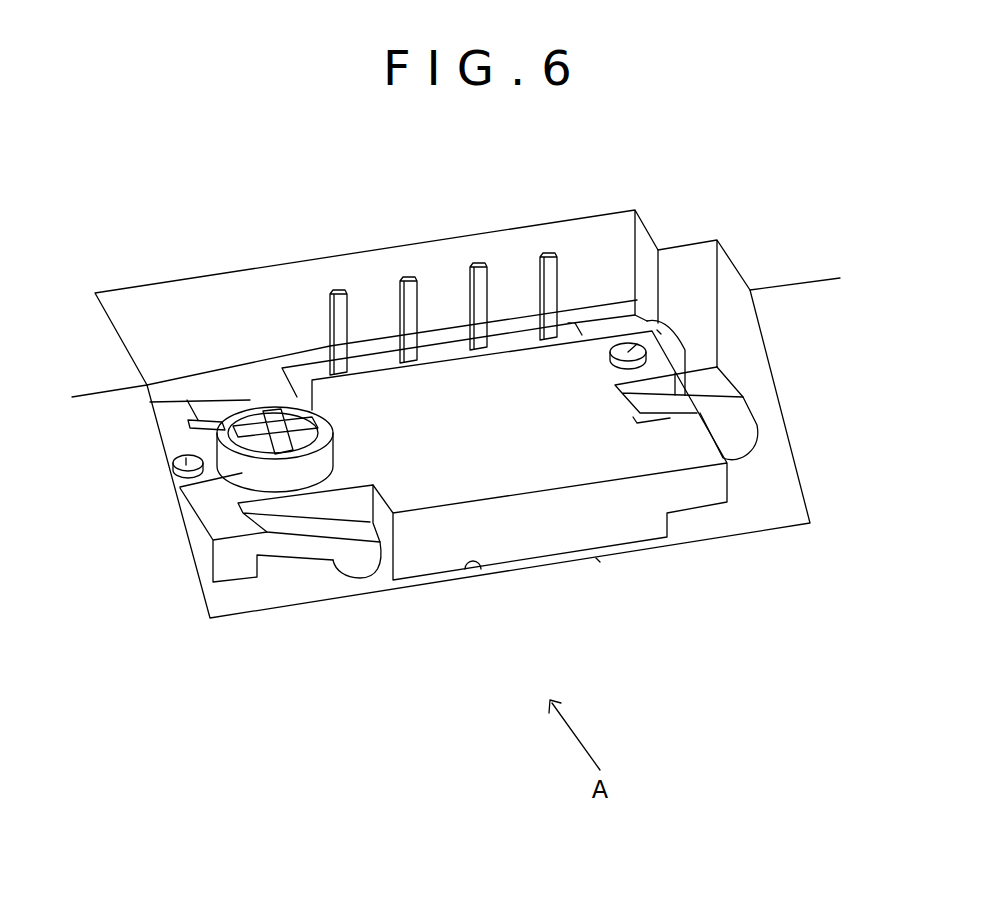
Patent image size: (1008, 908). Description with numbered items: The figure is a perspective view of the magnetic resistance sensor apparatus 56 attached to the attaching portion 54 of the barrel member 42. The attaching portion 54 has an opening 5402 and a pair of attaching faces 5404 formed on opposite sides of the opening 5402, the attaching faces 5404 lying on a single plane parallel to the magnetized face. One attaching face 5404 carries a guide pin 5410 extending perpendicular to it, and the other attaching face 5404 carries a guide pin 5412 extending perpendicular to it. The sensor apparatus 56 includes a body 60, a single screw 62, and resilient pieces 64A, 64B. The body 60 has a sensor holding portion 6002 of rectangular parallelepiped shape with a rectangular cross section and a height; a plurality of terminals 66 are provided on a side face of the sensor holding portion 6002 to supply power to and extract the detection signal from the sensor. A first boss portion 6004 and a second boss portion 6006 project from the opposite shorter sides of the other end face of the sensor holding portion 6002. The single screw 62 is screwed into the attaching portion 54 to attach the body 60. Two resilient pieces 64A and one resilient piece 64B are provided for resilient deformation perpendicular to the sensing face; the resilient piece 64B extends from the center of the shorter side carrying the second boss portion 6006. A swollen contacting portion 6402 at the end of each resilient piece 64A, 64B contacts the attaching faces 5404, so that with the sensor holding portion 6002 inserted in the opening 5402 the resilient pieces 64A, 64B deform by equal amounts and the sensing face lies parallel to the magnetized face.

The barrel member 42 is at (683, 270).
The attaching portion 54 is at (292, 283).
The magnetic resistance sensor apparatus 56 is at (622, 522).
The body 60 is at (595, 347).
The screw 62 is at (180, 487).
The resilient piece 64A is at (228, 402).
The resilient piece 64B is at (725, 408).
The terminals 66 is at (403, 276).
The opening 5402 is at (473, 572).
The attaching faces 5404 is at (735, 522).
The guide pin 5410 is at (185, 460).
The guide pin 5412 is at (635, 352).
The sensor holding portion 6002 is at (598, 560).
The first boss portion 6004 is at (193, 442).
The second boss portion 6006 is at (660, 333).
The contacting portion 6402 is at (357, 580).